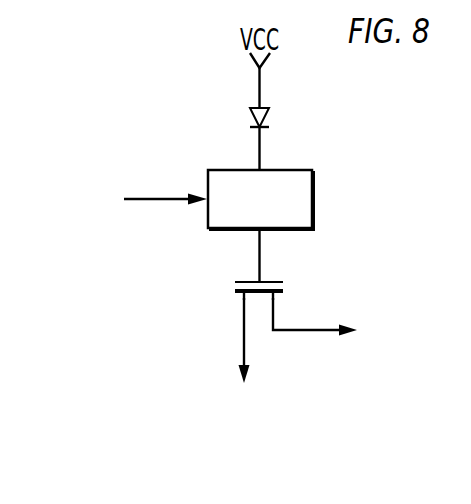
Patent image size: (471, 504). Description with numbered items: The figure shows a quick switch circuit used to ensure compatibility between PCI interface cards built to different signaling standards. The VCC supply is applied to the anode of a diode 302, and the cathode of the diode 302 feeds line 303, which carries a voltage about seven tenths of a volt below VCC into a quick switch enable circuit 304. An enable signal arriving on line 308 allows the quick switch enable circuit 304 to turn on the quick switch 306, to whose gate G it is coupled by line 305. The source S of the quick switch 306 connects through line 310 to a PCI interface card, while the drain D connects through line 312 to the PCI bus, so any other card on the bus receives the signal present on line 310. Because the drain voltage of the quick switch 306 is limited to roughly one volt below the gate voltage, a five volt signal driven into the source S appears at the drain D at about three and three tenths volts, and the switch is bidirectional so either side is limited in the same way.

The diode 302 is at (274, 117).
The line 303 is at (260, 147).
The quick switch enable circuit 304 is at (277, 211).
The line 305 is at (260, 258).
The quick switch 306 is at (228, 287).
The line 308 is at (163, 198).
The line 310 is at (244, 342).
The line 312 is at (322, 330).